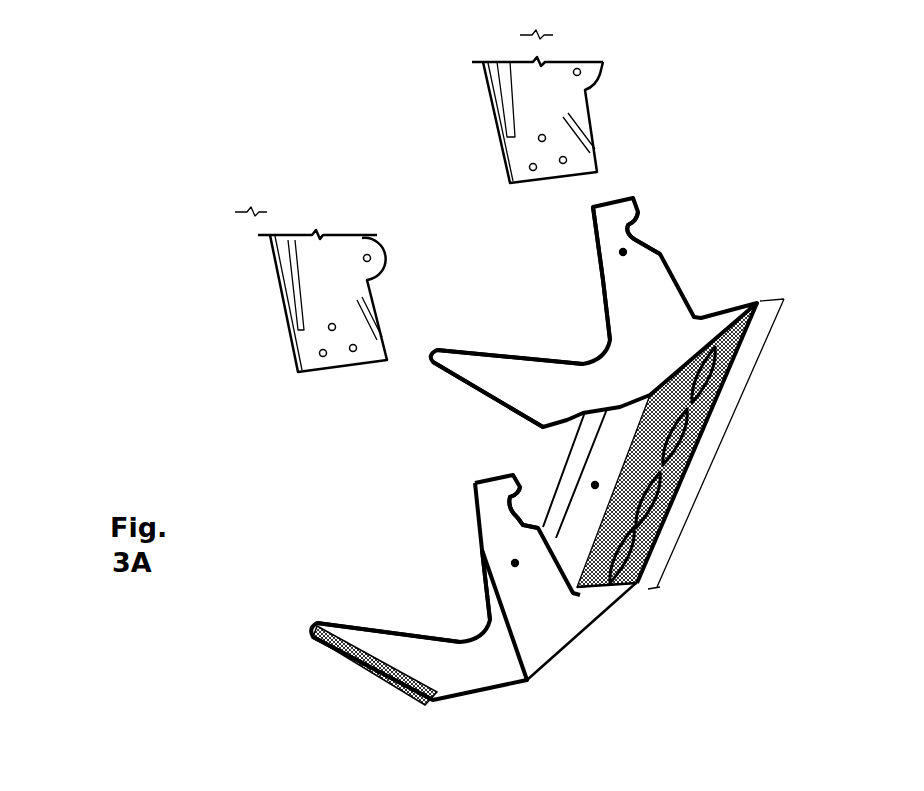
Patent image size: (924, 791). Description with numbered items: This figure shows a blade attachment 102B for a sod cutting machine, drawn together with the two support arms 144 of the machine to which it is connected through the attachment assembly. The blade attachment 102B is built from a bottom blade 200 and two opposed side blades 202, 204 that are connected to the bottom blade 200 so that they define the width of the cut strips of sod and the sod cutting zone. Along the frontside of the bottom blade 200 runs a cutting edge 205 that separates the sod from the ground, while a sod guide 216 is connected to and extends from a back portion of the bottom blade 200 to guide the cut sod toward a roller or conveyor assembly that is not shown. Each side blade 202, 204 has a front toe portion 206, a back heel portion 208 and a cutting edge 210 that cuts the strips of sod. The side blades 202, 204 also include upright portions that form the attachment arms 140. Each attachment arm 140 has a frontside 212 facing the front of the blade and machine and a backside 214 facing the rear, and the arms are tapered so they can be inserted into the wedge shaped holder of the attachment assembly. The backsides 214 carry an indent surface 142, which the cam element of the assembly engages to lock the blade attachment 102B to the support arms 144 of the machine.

The blade attachment 102B is at (693, 220).
The attachment arms 140 is at (620, 252).
The indent surface 142 is at (642, 237).
The support arms 144 is at (497, 174).
The bottom blade 200 is at (598, 485).
The side blade 202 is at (648, 287).
The side blade 204 is at (533, 583).
The cutting edge 205 is at (560, 466).
The front toe portion 206 is at (517, 373).
The back heel portion 208 is at (742, 352).
The cutting edge 210 is at (487, 397).
The frontside 212 is at (603, 272).
The backside 214 is at (668, 262).
The sod guide 216 is at (672, 465).